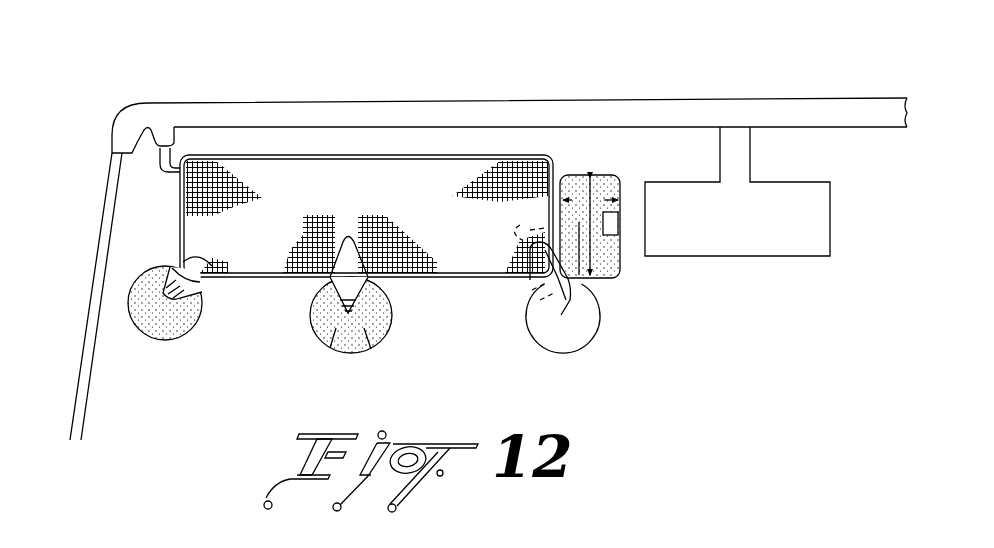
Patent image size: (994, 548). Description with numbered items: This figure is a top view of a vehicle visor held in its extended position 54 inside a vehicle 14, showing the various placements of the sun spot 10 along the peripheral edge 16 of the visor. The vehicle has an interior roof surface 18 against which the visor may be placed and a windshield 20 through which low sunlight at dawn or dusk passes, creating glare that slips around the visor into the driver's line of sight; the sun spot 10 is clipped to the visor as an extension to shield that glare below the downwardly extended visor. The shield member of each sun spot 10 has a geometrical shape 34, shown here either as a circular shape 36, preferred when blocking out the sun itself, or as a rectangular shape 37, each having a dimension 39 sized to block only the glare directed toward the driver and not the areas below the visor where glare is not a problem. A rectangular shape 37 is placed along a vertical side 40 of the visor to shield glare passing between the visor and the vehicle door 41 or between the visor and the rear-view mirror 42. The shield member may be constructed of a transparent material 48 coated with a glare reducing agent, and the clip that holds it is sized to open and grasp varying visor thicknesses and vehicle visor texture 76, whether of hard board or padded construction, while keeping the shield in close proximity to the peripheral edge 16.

The sun spot 10 is at (201, 353).
The vehicle 14 is at (509, 124).
The peripheral edge 16 is at (387, 188).
The interior roof surface 18 is at (405, 131).
The windshield 20 is at (149, 186).
The geometrical shape 34 is at (502, 221).
The circular shape 36 is at (502, 221).
The rectangular shape 37 is at (622, 177).
The dimension 39 is at (590, 226).
The vertical side 40 is at (551, 183).
The vehicle door 41 is at (100, 242).
The rear-view mirror 42 is at (716, 240).
The transparent material 48 is at (574, 337).
The extended position 54 is at (298, 250).
The vehicle visor texture 76 is at (205, 176).